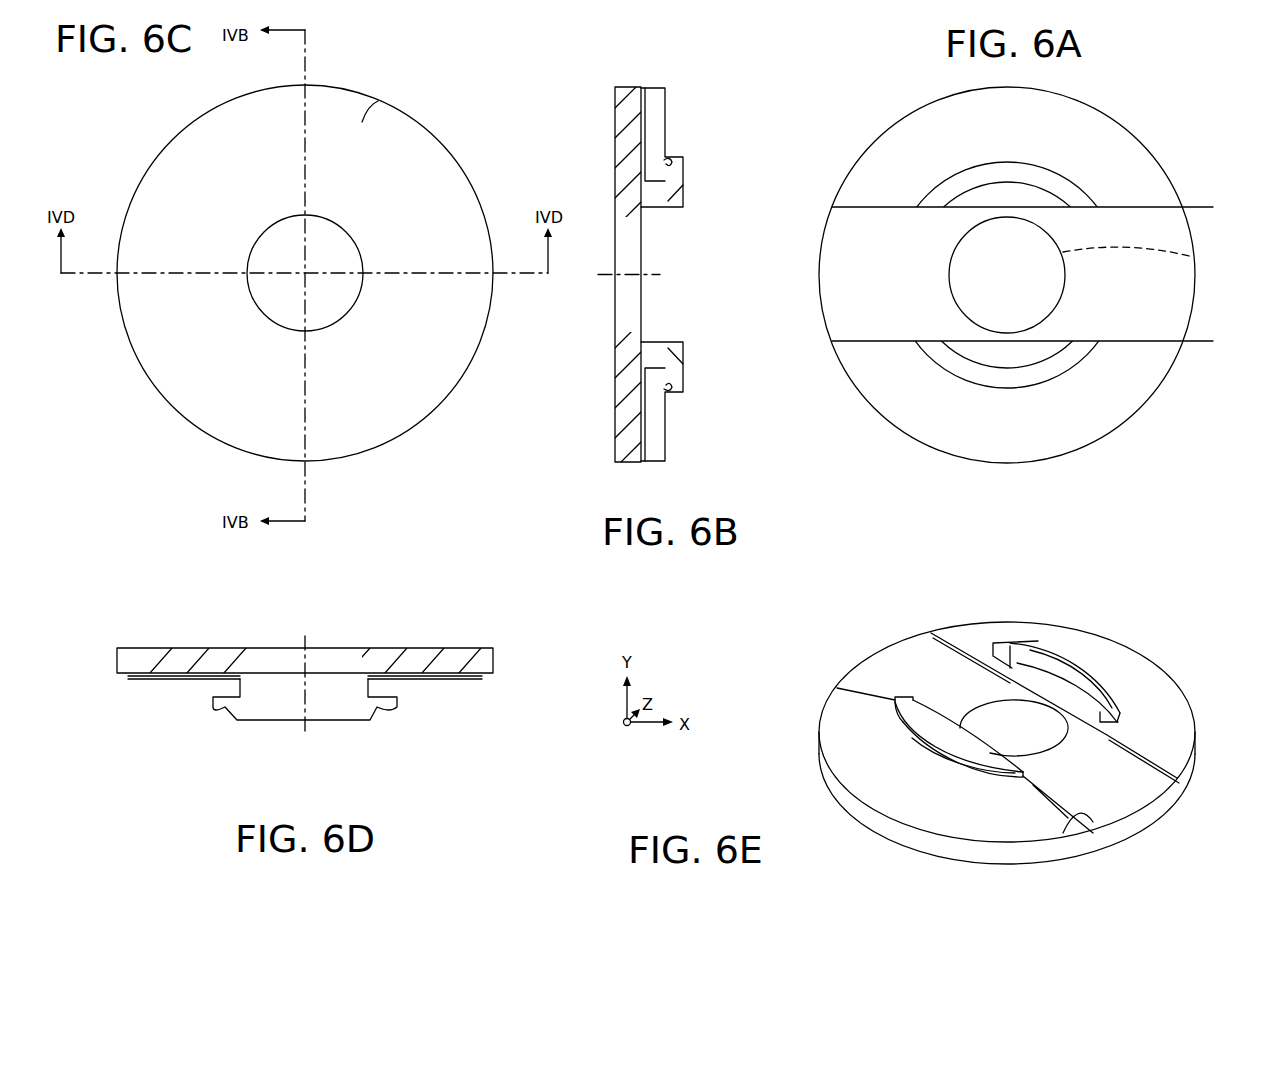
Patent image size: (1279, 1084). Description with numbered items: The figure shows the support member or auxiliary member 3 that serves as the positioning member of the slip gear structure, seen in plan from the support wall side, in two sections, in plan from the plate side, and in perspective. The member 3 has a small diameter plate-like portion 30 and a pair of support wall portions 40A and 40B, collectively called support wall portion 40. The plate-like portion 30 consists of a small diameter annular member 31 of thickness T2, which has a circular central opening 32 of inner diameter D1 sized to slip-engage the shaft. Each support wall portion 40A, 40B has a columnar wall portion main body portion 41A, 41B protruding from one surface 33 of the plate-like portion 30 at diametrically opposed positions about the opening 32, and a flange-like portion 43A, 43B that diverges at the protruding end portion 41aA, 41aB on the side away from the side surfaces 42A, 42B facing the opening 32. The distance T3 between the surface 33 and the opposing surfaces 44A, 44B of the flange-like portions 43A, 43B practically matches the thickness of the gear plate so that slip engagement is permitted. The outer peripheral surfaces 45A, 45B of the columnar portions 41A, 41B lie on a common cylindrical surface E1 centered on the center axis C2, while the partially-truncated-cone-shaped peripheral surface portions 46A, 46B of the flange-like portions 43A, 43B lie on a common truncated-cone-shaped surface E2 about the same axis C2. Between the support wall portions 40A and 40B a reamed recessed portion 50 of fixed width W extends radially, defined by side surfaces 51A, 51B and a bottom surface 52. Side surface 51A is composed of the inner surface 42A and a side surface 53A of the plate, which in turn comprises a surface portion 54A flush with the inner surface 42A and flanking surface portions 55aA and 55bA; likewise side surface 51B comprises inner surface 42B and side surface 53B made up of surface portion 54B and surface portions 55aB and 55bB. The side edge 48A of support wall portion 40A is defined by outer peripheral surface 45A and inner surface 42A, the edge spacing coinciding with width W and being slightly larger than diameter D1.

In FIG. 6C, the support member or auxiliary member 3 is at (350, 470).
In FIG. 6B, the support member or auxiliary member 3 is at (584, 463).
In FIG. 6A, the support member or auxiliary member 3 is at (898, 442).
In FIG. 6D, the support member or auxiliary member 3 is at (532, 655).
In FIG. 6E, the support member or auxiliary member 3 is at (800, 792).
In FIG. 6C, the small diameter plate-like portion 30 is at (390, 142).
In FIG. 6B, the small diameter plate-like portion 30 is at (628, 290).
In FIG. 6A, the small diameter plate-like portion 30 is at (1128, 400).
In FIG. 6D, the small diameter plate-like portion 30 is at (420, 660).
In FIG. 6E, the small diameter plate-like portion 30 is at (913, 810).
In FIG. 6C, the small diameter annular member 31 is at (373, 102).
In FIG. 6B, the small diameter annular member 31 is at (615, 400).
In FIG. 6A, the small diameter annular member 31 is at (895, 378).
In FIG. 6D, the small diameter annular member 31 is at (175, 660).
In FIG. 6E, the small diameter annular member 31 is at (965, 840).
In FIG. 6C, the circular central opening 32 is at (330, 320).
In FIG. 6B, the circular central opening 32 is at (650, 222).
In FIG. 6A, the circular central opening 32 is at (1052, 273).
In FIG. 6D, the circular central opening 32 is at (352, 655).
In FIG. 6E, the circular central opening 32 is at (975, 698).
In FIG. 6B, the surface of the plate-like portion 33 is at (646, 100).
In FIG. 6A, the surface of the plate-like portion 33 is at (1135, 190).
In FIG. 6D, the surface of the plate-like portion 33 is at (440, 679).
In FIG. 6E, the surface of the plate-like portion 33 is at (990, 625).
In FIG. 6B, the support wall portion 40 is at (684, 190).
In FIG. 6A, the support wall portion 40 is at (1007, 275).
In FIG. 6D, the support wall portion 40 is at (305, 699).
In FIG. 6B, the support wall portion 40A is at (662, 450).
In FIG. 6A, the support wall portion 40A is at (1115, 395).
In FIG. 6E, the support wall portion 40A is at (908, 740).
In FIG. 6B, the support wall portion 40B is at (667, 150).
In FIG. 6A, the support wall portion 40B is at (1058, 192).
In FIG. 6D, the support wall portion 40B is at (320, 721).
In FIG. 6E, the support wall portion 40B is at (1115, 660).
In FIG. 6B, the columnar wall portion main body portion 41A is at (672, 345).
In FIG. 6E, the columnar wall portion main body portion 41A is at (1010, 782).
In FIG. 6B, the columnar wall portion main body portion 41B is at (668, 210).
In FIG. 6D, the columnar wall portion main body portion 41B is at (398, 706).
In FIG. 6E, the columnar wall portion main body portion 41B is at (1140, 825).
In FIG. 6B, the protruding end portion 41aA is at (680, 375).
In FIG. 6B, the protruding end portion 41aB is at (675, 172).
In FIG. 6D, the protruding end portion 41aB is at (215, 700).
In FIG. 6E, the protruding end portion 41aB is at (1160, 800).
In FIG. 6B, the side surface (inner surface) 42A is at (662, 338).
In FIG. 6A, the side surface (inner surface) 42A is at (1050, 341).
In FIG. 6B, the side surface (inner surface) 42B is at (660, 215).
In FIG. 6A, the side surface (inner surface) 42B is at (970, 210).
In FIG. 6D, the side surface (inner surface) 42B is at (275, 713).
In FIG. 6E, the side surface (inner surface) 42B is at (1073, 708).
In FIG. 6B, the flange-like portion 43A is at (665, 400).
In FIG. 6A, the flange-like portion 43A is at (965, 405).
In FIG. 6E, the flange-like portion 43A is at (897, 762).
In FIG. 6B, the flange-like portion 43B is at (672, 170).
In FIG. 6A, the flange-like portion 43B is at (957, 185).
In FIG. 6D, the flange-like portion 43B is at (230, 706).
In FIG. 6E, the flange-like portion 43B is at (1110, 690).
In FIG. 6B, the opposing surface 44A is at (660, 440).
In FIG. 6E, the opposing surface 44A is at (1045, 805).
In FIG. 6B, the opposing surface 44B is at (668, 165).
In FIG. 6D, the opposing surface 44B is at (385, 712).
In FIG. 6E, the opposing surface 44B is at (1118, 728).
In FIG. 6B, the outer peripheral surface 45A is at (672, 380).
In FIG. 6E, the outer peripheral surface 45A is at (948, 790).
In FIG. 6B, the outer peripheral surface 45B is at (660, 130).
In FIG. 6D, the outer peripheral surface 45B is at (230, 695).
In FIG. 6E, the outer peripheral surface 45B is at (993, 648).
In FIG. 6B, the partially-truncated-cone-shaped peripheral surface portion 46A is at (660, 420).
In FIG. 6A, the partially-truncated-cone-shaped peripheral surface portion 46A is at (1040, 385).
In FIG. 6E, the partially-truncated-cone-shaped peripheral surface portion 46A is at (915, 707).
In FIG. 6B, the partially-truncated-cone-shaped peripheral surface portion 46B is at (680, 180).
In FIG. 6A, the partially-truncated-cone-shaped peripheral surface portion 46B is at (1040, 178).
In FIG. 6D, the partially-truncated-cone-shaped peripheral surface portion 46B is at (222, 713).
In FIG. 6E, the partially-truncated-cone-shaped peripheral surface portion 46B is at (1105, 672).
In FIG. 6E, the side edge 48A is at (1025, 783).
In FIG. 6B, the reamed recessed portion 50 is at (684, 365).
In FIG. 6A, the reamed recessed portion 50 is at (878, 212).
In FIG. 6D, the reamed recessed portion 50 is at (440, 683).
In FIG. 6E, the reamed recessed portion 50 is at (893, 645).
In FIG. 6B, the side surface of the recessed portion 51A is at (684, 345).
In FIG. 6A, the side surface of the recessed portion 51A is at (1105, 342).
In FIG. 6E, the side surface of the recessed portion 51A is at (862, 698).
In FIG. 6B, the side surface of the recessed portion 51B is at (678, 205).
In FIG. 6A, the side surface of the recessed portion 51B is at (907, 209).
In FIG. 6D, the side surface of the recessed portion 51B is at (315, 712).
In FIG. 6E, the side surface of the recessed portion 51B is at (1075, 690).
In FIG. 6B, the bottom surface 52 is at (660, 330).
In FIG. 6A, the bottom surface 52 is at (832, 277).
In FIG. 6D, the bottom surface 52 is at (448, 700).
In FIG. 6E, the bottom surface 52 is at (875, 668).
In FIG. 6A, the side surface 53A is at (947, 341).
In FIG. 6E, the side surface 53A is at (1070, 800).
In FIG. 6A, the side surface 53B is at (988, 209).
In FIG. 6D, the side surface 53B is at (265, 711).
In FIG. 6E, the side surface 53B is at (1060, 690).
In FIG. 6B, the surface portion 54A is at (615, 370).
In FIG. 6A, the surface portion 54A is at (960, 337).
In FIG. 6A, the surface portion 54B is at (1003, 285).
In FIG. 6D, the surface portion 54B is at (327, 712).
In FIG. 6E, the surface portion 54B is at (1025, 690).
In FIG. 6A, the surface portion 55aA is at (865, 341).
In FIG. 6A, the surface portion 55aB is at (845, 210).
In FIG. 6D, the surface portion 55aB is at (450, 672).
In FIG. 6E, the surface portion 55aB is at (930, 632).
In FIG. 6A, the surface portion 55bA is at (1108, 342).
In FIG. 6A, the surface portion 55bB is at (1138, 209).
In FIG. 6D, the surface portion 55bB is at (150, 676).
In FIG. 6E, the surface portion 55bB is at (1180, 780).
In FIG. 6C, the center axis C2 is at (305, 273).
In FIG. 6B, the center axis C2 is at (650, 275).
In FIG. 6A, the center axis C2 is at (1228, 211).
In FIG. 6D, the center axis C2 is at (307, 636).
In FIG. 6B, the inner diameter D1 is at (641, 332).
In FIG. 6D, the inner diameter D1 is at (362, 610).
In FIG. 6D, the common cylindrical surface E1 is at (390, 670).
In FIG. 6B, the common truncated-cone-shaped surface E2 is at (670, 385).
In FIG. 6A, the common truncated-cone-shaped surface E2 is at (1075, 195).
In FIG. 6E, the common truncated-cone-shaped surface E2 is at (1112, 700).
In FIG. 6B, the thickness T2 is at (650, 490).
In FIG. 6D, the thickness T2 is at (493, 648).
In FIG. 6B, the distance T3 is at (672, 443).
In FIG. 6D, the distance T3 is at (430, 697).
In FIG. 6A, the width W is at (1213, 207).